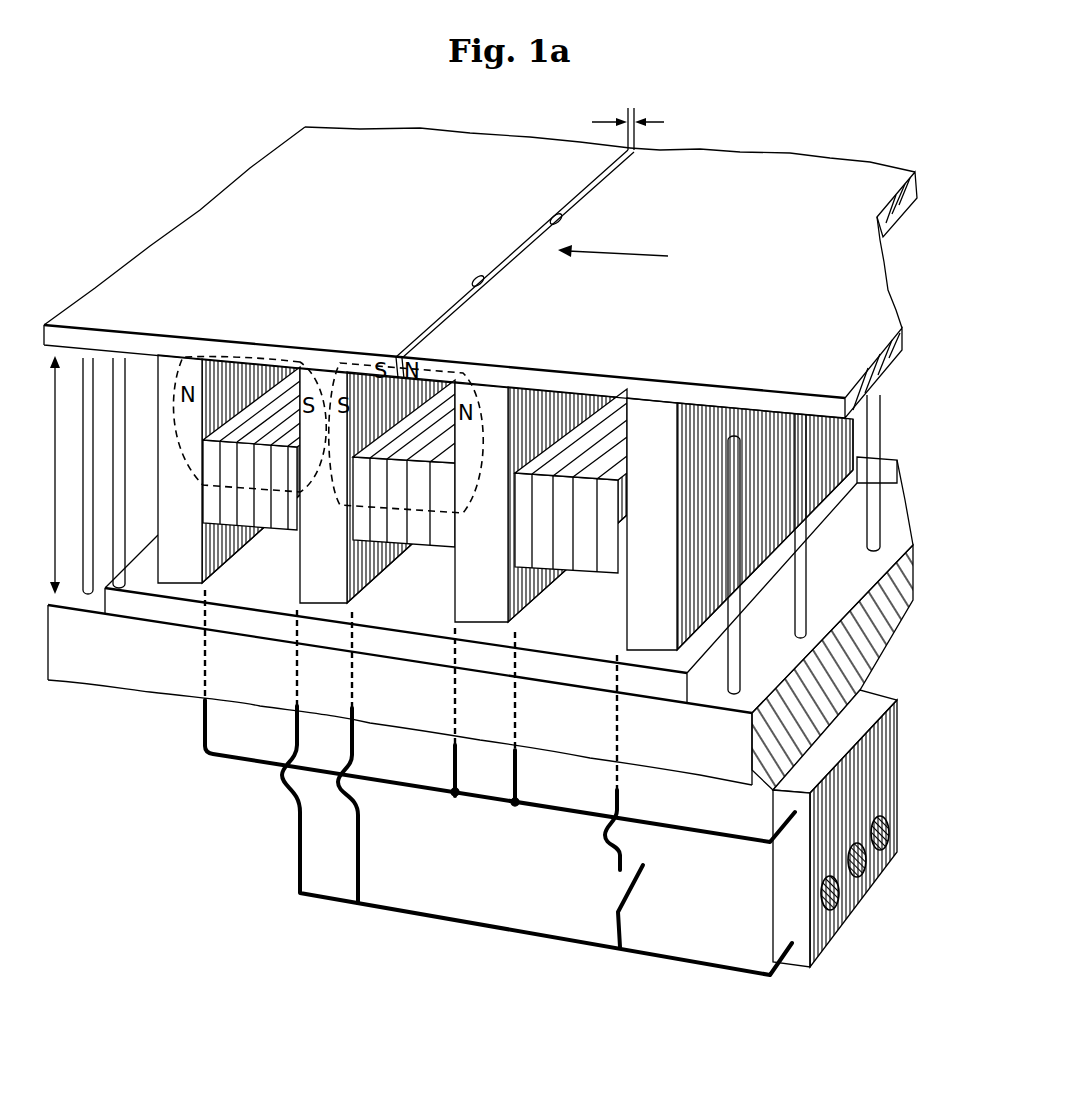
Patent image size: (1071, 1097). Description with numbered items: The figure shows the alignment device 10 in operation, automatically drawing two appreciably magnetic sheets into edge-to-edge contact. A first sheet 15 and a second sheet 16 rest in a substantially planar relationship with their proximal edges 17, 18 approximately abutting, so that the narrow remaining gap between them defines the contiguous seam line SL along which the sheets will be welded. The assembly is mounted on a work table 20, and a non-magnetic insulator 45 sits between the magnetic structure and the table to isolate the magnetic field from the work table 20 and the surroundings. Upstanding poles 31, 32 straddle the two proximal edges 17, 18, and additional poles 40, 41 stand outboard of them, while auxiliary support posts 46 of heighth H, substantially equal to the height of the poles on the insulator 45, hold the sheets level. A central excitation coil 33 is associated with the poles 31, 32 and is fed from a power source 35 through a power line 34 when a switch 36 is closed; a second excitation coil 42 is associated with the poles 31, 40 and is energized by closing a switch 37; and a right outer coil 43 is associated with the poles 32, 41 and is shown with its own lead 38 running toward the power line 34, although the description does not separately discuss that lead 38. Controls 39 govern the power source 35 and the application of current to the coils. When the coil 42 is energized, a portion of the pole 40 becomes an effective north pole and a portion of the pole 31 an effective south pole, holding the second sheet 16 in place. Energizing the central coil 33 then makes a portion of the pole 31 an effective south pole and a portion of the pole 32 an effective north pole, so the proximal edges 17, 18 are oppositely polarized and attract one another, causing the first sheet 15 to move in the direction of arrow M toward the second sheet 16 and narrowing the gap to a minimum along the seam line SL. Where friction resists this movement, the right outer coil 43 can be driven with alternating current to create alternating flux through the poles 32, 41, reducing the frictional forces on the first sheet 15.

The alignment device 10 is at (480, 263).
The first sheet 15 is at (783, 296).
The second sheet 16 is at (353, 251).
The proximal edge 17 is at (484, 283).
The proximal edge 18 is at (551, 218).
The work table 20 is at (832, 605).
The pole 31 is at (320, 395).
The pole 32 is at (490, 385).
The excitation coil 33 is at (442, 541).
The power line 34 is at (668, 832).
The power source 35 is at (893, 722).
The switch 36 is at (365, 848).
The switch 37 is at (298, 825).
The coil lead 38 is at (642, 868).
The controls 39 is at (882, 852).
The pole 40 is at (170, 375).
The pole 41 is at (648, 418).
The excitation coil 42 is at (195, 512).
The right outer coil 43 is at (606, 517).
The non-magnetic insulator 45 is at (657, 688).
The supports 46 is at (120, 400).
The contiguous seam line SL is at (597, 183).
The heighth of auxiliary support posts H is at (54, 475).
The direction of movement M is at (628, 256).